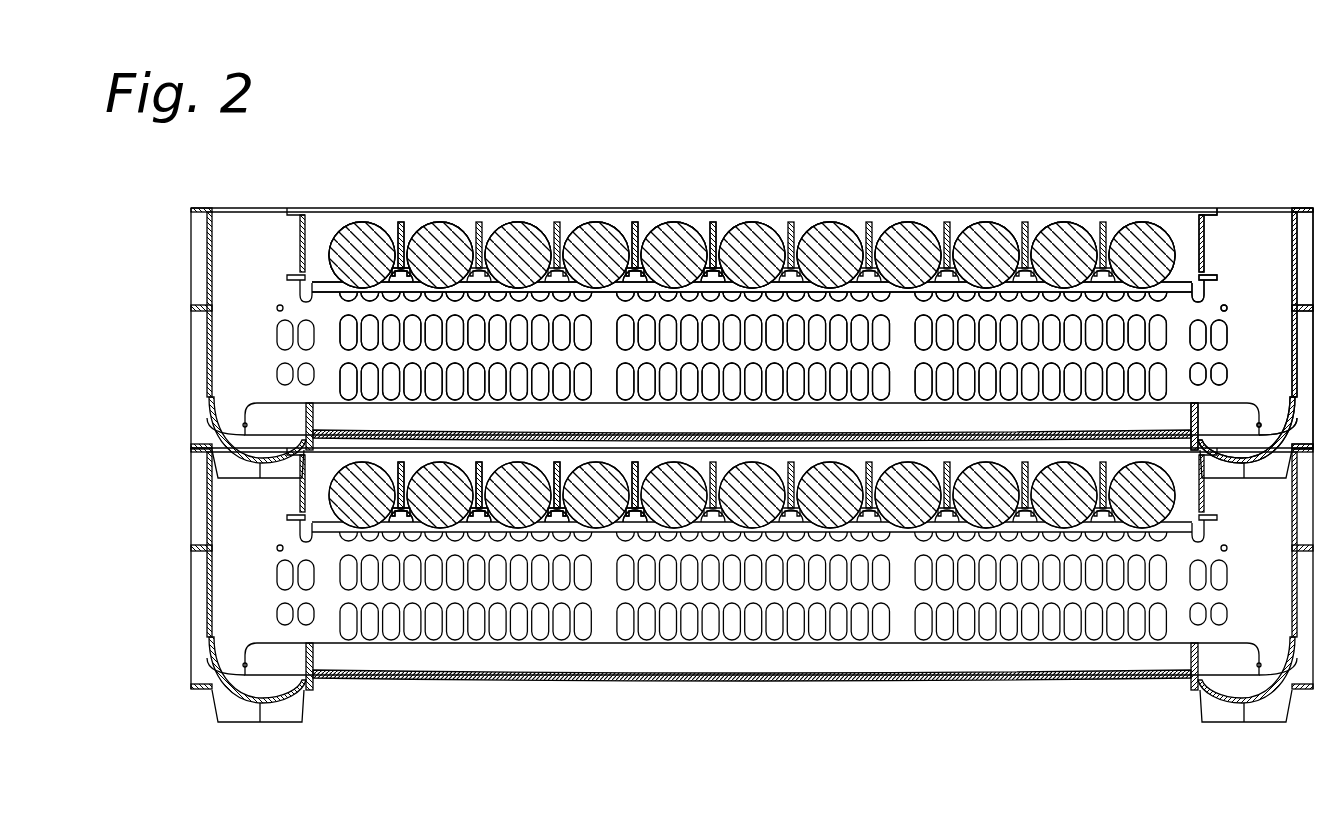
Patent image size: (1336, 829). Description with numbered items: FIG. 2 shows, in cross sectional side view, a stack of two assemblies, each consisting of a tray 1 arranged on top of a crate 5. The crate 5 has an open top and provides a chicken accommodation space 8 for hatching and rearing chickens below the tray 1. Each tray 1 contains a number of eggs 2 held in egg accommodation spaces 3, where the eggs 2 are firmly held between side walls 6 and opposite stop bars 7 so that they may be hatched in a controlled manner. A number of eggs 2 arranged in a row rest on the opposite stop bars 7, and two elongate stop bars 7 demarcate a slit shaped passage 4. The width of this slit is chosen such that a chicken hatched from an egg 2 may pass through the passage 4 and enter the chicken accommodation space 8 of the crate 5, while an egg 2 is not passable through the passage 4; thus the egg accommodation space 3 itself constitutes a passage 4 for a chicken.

The tray 1 is at (488, 222).
The eggs 2 is at (897, 233).
The egg accommodation space 3 is at (415, 220).
The passage 4 is at (737, 290).
The crate 5 is at (1252, 250).
The side walls 6 is at (477, 477).
The stop bars 7 is at (622, 517).
The chicken accommodation space 8 is at (900, 355).